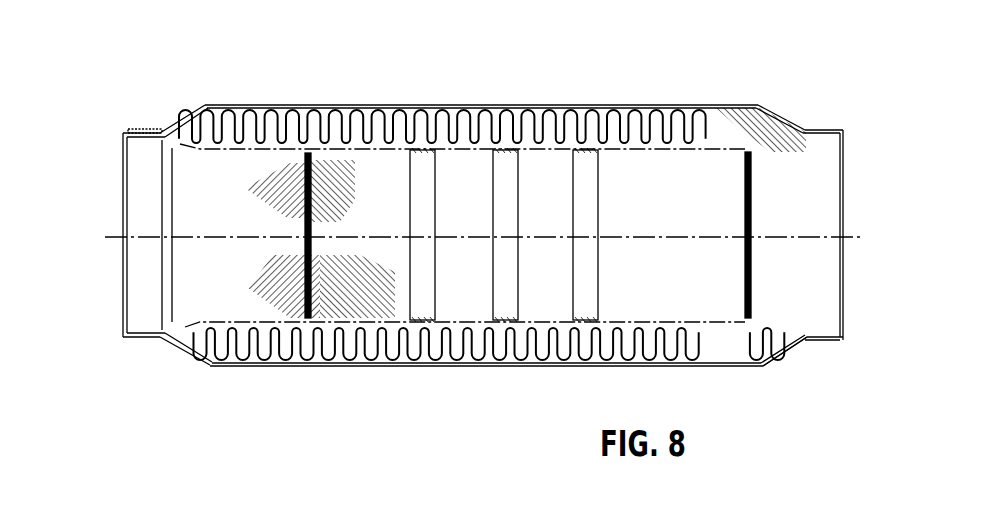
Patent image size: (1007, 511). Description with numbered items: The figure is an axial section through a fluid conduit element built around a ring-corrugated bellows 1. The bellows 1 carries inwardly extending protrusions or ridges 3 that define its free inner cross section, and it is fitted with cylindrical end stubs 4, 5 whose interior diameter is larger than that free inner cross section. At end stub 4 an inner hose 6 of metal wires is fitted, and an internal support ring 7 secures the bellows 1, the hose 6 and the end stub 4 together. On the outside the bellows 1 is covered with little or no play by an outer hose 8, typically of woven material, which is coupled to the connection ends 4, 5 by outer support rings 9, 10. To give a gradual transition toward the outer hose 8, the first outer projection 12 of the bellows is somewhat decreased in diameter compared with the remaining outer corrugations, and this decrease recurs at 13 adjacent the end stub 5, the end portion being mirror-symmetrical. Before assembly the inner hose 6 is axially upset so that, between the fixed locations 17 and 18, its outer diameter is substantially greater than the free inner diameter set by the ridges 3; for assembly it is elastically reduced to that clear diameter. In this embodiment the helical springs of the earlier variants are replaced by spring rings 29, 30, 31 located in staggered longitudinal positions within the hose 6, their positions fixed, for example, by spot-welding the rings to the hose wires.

The ring-corrugated bellows 1 is at (357, 125).
The inner protrusions 3 is at (320, 130).
The cylindrical end stub 4 is at (123, 137).
The cylindrical end stub 5 is at (815, 335).
The inner hose 6 is at (210, 188).
The internal support ring 7 is at (140, 277).
The outer hose 8 is at (762, 106).
The outer support ring 9 is at (140, 130).
The outer support ring 10 is at (826, 130).
The first outer projection 12 is at (195, 355).
The decreased-diameter outer projection 13 is at (775, 355).
The fixed location 17 is at (755, 213).
The fixed location 18 is at (315, 285).
The spring ring 29 is at (425, 180).
The spring ring 30 is at (503, 175).
The spring ring 31 is at (590, 178).